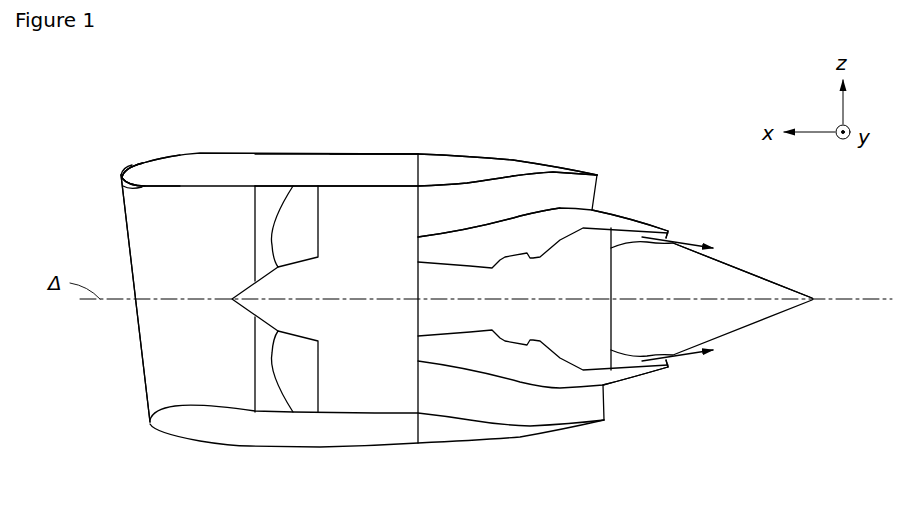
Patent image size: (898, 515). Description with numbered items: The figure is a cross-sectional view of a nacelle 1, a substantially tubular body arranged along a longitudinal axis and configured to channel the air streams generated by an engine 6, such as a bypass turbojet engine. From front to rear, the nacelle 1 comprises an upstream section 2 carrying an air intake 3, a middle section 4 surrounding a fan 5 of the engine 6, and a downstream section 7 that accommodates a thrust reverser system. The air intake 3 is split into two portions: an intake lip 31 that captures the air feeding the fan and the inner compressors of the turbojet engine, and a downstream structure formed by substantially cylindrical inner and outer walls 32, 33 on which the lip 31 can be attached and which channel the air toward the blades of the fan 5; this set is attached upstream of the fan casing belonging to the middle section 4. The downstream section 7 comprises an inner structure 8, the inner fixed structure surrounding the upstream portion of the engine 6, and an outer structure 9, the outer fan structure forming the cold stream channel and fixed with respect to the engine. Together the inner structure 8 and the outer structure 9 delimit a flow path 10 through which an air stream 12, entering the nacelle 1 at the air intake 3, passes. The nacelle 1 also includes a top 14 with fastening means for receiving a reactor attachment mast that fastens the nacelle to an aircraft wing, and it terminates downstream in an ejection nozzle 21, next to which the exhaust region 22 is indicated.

The nacelle 1 is at (612, 148).
The upstream section 2 is at (197, 170).
The air intake 3 is at (142, 180).
The intake lip 31 is at (123, 182).
The inner wall 32 is at (140, 192).
The outer wall 33 is at (127, 163).
The air stream 12 is at (178, 252).
The middle section 4 is at (383, 171).
The top 14 is at (397, 154).
The fan 5 is at (367, 390).
The flow path 10 is at (440, 205).
The downstream section 7 is at (516, 155).
The outer structure 9 is at (535, 170).
The inner structure 8 is at (578, 206).
The engine 6 is at (593, 253).
The primary nozzle 22 is at (658, 228).
The ejection nozzle 21 is at (750, 253).